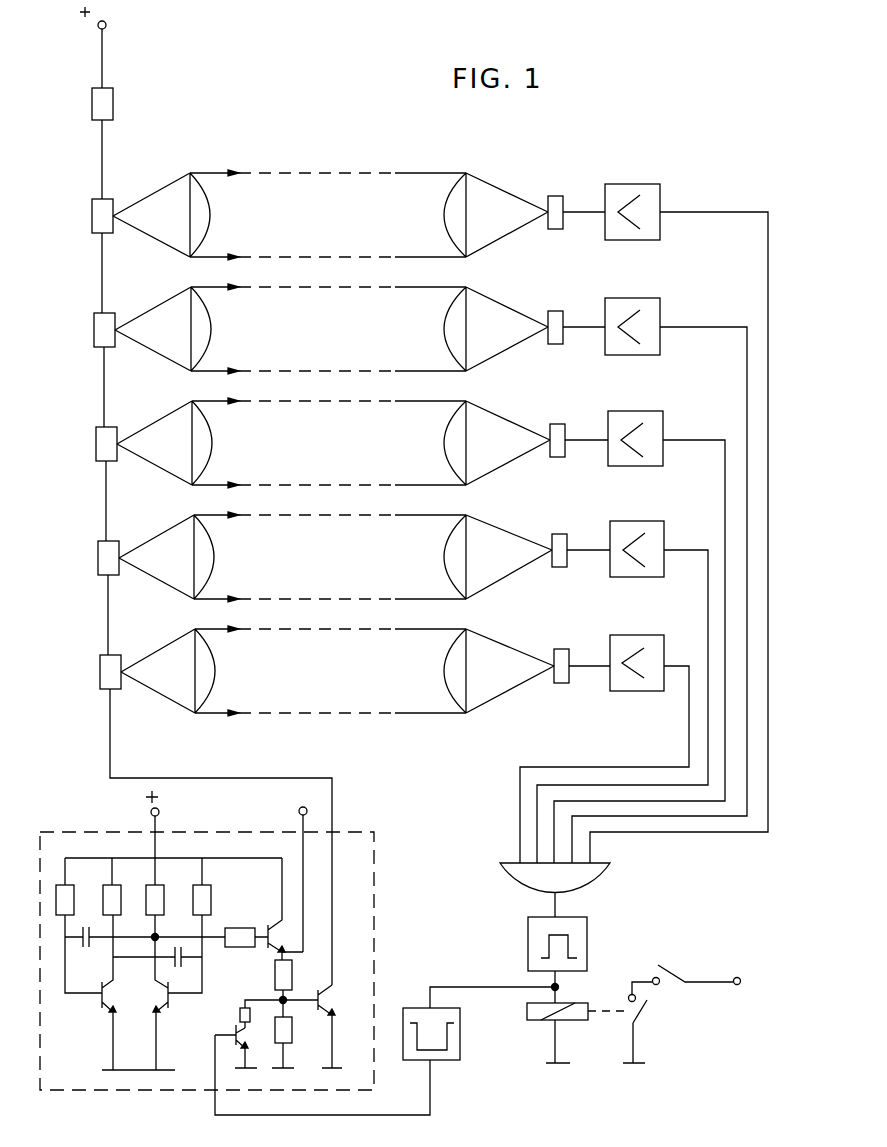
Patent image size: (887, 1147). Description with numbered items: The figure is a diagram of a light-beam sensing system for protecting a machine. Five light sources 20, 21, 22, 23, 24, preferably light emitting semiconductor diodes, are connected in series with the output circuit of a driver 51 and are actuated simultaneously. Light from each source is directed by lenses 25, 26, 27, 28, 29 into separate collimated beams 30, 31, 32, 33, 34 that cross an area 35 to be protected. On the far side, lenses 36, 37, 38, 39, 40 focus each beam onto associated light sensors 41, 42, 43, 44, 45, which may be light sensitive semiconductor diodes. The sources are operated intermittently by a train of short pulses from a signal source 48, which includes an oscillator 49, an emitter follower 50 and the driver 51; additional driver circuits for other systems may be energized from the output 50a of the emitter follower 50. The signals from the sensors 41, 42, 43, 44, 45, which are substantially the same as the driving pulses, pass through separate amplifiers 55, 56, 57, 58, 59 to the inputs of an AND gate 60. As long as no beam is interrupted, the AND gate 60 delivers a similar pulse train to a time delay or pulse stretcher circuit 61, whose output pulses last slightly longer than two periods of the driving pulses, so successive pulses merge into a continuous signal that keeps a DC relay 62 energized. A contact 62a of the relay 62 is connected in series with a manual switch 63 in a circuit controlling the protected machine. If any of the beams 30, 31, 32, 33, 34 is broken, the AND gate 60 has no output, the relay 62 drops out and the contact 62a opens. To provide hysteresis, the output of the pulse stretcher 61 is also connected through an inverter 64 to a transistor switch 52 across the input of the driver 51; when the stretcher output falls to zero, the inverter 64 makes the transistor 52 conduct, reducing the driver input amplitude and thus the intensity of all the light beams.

The light source 20 is at (103, 676).
The light source 21 is at (102, 560).
The light source 22 is at (102, 447).
The light source 23 is at (96, 338).
The light source 24 is at (97, 218).
The lens 25 is at (207, 692).
The lens 26 is at (203, 582).
The lens 27 is at (195, 470).
The lens 28 is at (193, 358).
The lens 29 is at (193, 245).
The collimated beam 30 is at (343, 724).
The collimated beam 31 is at (363, 595).
The collimated beam 32 is at (373, 482).
The collimated beam 33 is at (365, 369).
The collimated beam 34 is at (385, 256).
The area to be protected 35 is at (347, 154).
The lens 36 is at (475, 706).
The lens 37 is at (483, 591).
The lens 38 is at (478, 479).
The lens 39 is at (478, 366).
The lens 40 is at (470, 252).
The light sensor 41 is at (566, 684).
The light sensor 42 is at (564, 568).
The light sensor 43 is at (562, 458).
The light sensor 44 is at (564, 345).
The light sensor 45 is at (560, 230).
The signal source 48 is at (354, 836).
The oscillator 49 is at (92, 1040).
The emitter follower 50 is at (256, 986).
The output of emitter follower 50a is at (286, 869).
The driver 51 is at (363, 1044).
The transistor switch 52 is at (228, 1030).
The amplifier 55 is at (637, 680).
The amplifier 56 is at (655, 577).
The amplifier 57 is at (652, 466).
The amplifier 58 is at (655, 355).
The amplifier 59 is at (655, 240).
The AND gate 60 is at (609, 879).
The time delay or pulse stretcher circuit 61 is at (527, 930).
The DC relay 62 is at (535, 1012).
The relay contact 62a is at (646, 1014).
The manual switch 63 is at (671, 975).
The inverter 64 is at (420, 1016).